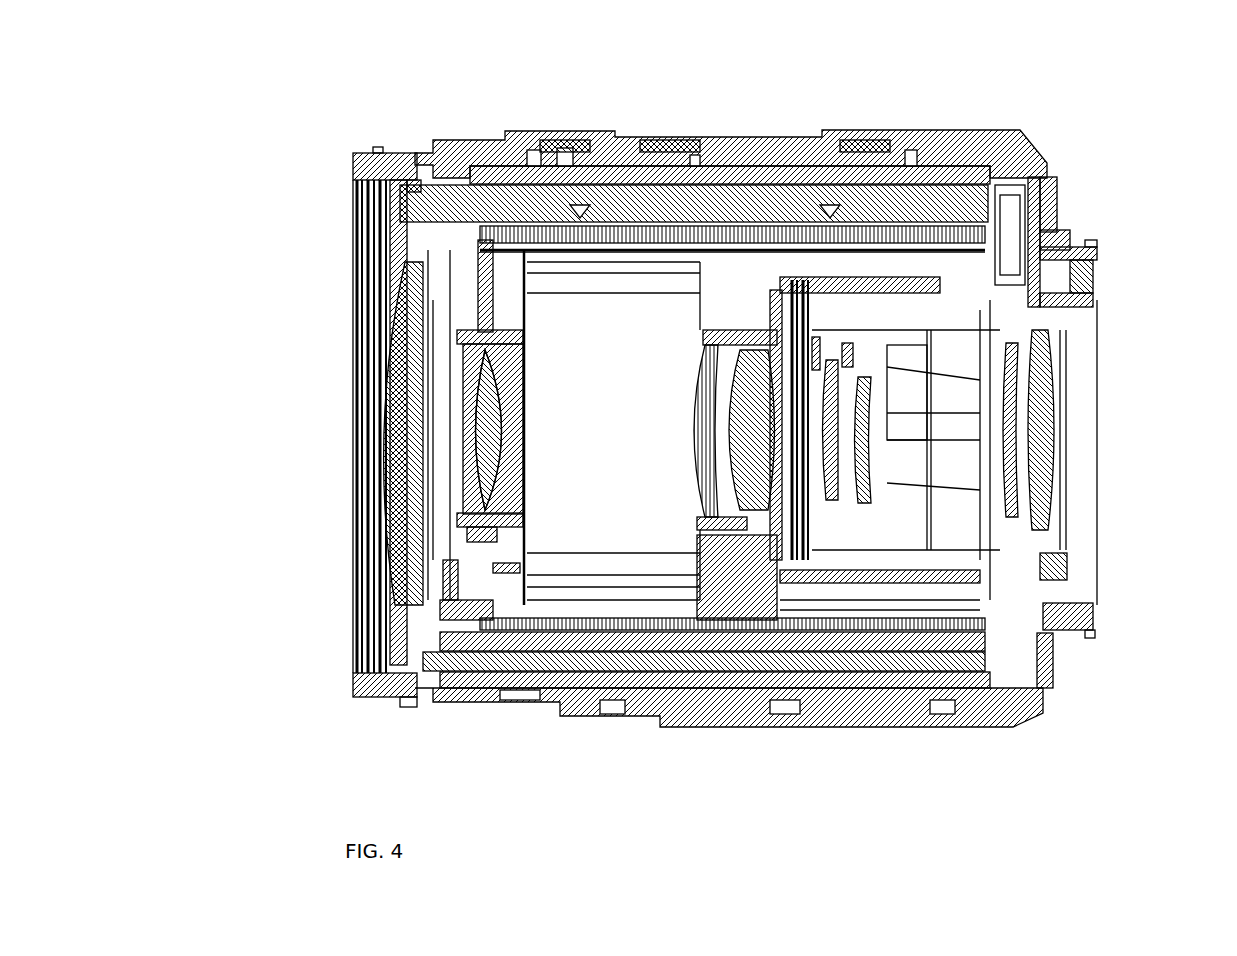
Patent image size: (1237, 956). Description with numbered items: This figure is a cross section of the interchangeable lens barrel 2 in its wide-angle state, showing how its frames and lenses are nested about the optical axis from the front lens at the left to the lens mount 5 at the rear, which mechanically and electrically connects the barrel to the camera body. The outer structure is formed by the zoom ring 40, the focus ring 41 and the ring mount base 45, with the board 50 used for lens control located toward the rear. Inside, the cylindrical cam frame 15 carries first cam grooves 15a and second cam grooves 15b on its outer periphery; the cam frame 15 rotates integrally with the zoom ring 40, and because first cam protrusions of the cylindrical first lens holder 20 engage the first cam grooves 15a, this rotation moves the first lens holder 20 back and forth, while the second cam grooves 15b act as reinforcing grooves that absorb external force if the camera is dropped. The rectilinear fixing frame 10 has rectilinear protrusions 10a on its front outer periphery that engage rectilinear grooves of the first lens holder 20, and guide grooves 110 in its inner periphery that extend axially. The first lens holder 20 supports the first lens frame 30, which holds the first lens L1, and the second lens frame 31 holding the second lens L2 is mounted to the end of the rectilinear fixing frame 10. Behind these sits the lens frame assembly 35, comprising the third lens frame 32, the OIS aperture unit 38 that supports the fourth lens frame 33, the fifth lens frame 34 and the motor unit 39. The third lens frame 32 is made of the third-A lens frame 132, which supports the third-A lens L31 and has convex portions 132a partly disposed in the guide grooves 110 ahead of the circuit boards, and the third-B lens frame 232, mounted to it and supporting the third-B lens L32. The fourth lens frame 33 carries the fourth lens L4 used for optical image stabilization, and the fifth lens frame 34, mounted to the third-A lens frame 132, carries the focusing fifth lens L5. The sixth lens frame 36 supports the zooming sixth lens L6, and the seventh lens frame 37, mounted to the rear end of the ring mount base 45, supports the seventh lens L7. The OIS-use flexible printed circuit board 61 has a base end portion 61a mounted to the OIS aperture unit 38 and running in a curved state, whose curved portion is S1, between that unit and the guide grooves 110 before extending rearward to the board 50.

The lens barrel 2 is at (326, 143).
The lens mount 5 is at (1093, 608).
The rectilinear fixing frame 10 is at (778, 200).
The rectilinear protrusions 10a is at (493, 196).
The cam frame 15 is at (884, 230).
The first cam grooves 15a is at (977, 497).
The second cam grooves 15b is at (982, 468).
The first lens holder 20 is at (708, 165).
The first lens frame 30 is at (403, 290).
The second lens frame 31 is at (497, 313).
The third lens frame 32 is at (780, 783).
The fourth lens frame 33 is at (862, 607).
The fifth lens frame 34 is at (897, 580).
The lens frame assembly 35 is at (935, 826).
The sixth lens frame 36 is at (1093, 268).
The seventh lens frame 37 is at (1072, 293).
The OIS aperture unit 38 is at (802, 613).
The motor unit 39 is at (668, 722).
The zoom ring 40 is at (628, 135).
The focus ring 41 is at (559, 140).
The ring mount base 45 is at (672, 160).
The board 50 is at (1032, 190).
The OIS-use flexible printed circuit board 61 is at (742, 222).
The base end portion 61a is at (862, 160).
The guide grooves 110 is at (933, 222).
The third-A lens frame 132 is at (711, 540).
The convex portions 132a is at (690, 253).
The third-B lens frame 232 is at (747, 640).
The curved portion S1 is at (915, 275).
The first lens L1 is at (405, 482).
The second lens L2 is at (498, 452).
The third-A lens L31 is at (700, 425).
The third-B lens L32 is at (735, 455).
The fourth lens L4 is at (880, 367).
The fifth lens L5 is at (872, 440).
The sixth lens L6 is at (1012, 392).
The seventh lens L7 is at (1042, 413).